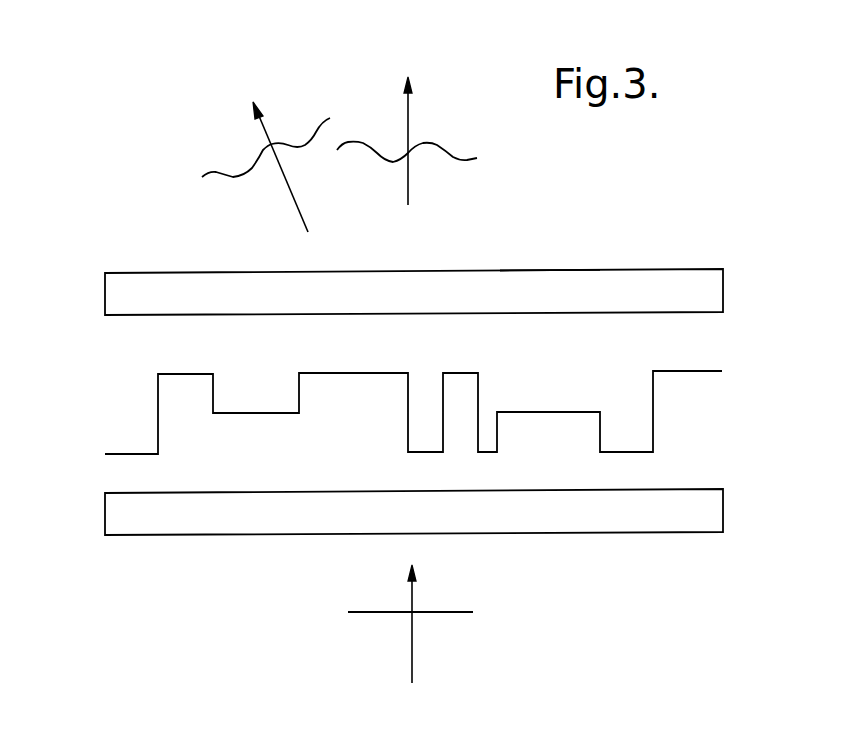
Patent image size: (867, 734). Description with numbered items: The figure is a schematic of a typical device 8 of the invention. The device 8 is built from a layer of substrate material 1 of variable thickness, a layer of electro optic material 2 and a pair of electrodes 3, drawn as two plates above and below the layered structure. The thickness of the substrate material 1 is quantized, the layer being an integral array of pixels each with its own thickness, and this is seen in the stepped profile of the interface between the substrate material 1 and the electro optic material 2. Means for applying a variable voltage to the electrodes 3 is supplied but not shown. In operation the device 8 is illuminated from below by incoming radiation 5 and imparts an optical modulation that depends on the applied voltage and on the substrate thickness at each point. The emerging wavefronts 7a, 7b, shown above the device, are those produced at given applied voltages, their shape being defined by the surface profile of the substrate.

The layer of substrate material 1 is at (692, 426).
The layer of electro optic material 2 is at (692, 358).
The electrodes 3 is at (105, 296).
The incoming radiation 5 is at (412, 645).
The wavefront 7a is at (408, 119).
The wavefront 7b is at (265, 132).
The device 8 is at (556, 265).